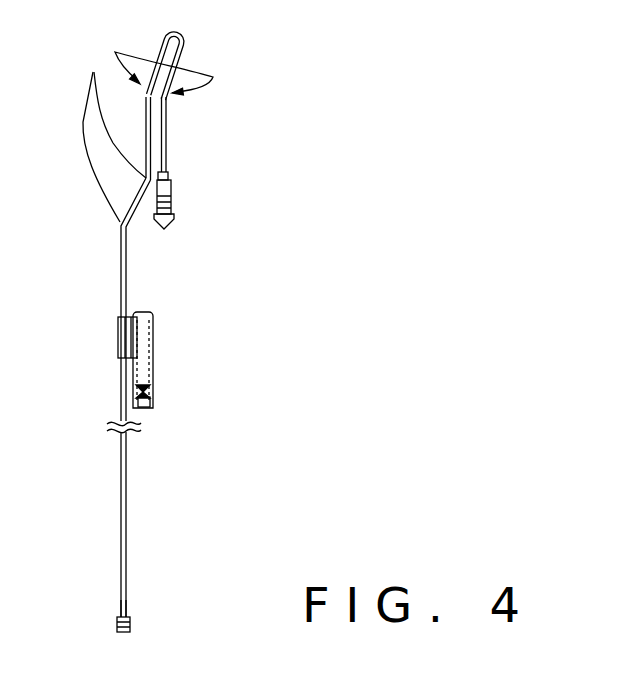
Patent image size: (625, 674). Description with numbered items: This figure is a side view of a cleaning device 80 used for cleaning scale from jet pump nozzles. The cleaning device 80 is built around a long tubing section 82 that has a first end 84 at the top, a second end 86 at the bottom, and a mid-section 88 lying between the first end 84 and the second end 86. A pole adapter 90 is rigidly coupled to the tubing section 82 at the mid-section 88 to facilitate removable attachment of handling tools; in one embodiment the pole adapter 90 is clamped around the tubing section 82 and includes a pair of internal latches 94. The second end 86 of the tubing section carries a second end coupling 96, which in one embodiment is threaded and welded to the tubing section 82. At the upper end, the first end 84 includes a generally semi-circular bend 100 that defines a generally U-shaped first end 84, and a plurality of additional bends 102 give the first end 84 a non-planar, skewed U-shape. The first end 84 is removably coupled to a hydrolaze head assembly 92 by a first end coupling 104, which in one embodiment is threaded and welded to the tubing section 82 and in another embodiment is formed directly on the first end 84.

The cleaning device 80 is at (239, 291).
The tubing section 82 is at (120, 291).
The first end 84 is at (203, 24).
The second end 86 is at (200, 600).
The mid-section 88 is at (180, 419).
The pole adapter 90 is at (140, 336).
The hydrolaze head assembly 92 is at (188, 234).
The internal latches 94 is at (146, 407).
The second end coupling 96 is at (131, 627).
The semi-circular bend 100 is at (181, 30).
The bends 102 is at (106, 133).
The first end coupling 104 is at (172, 178).